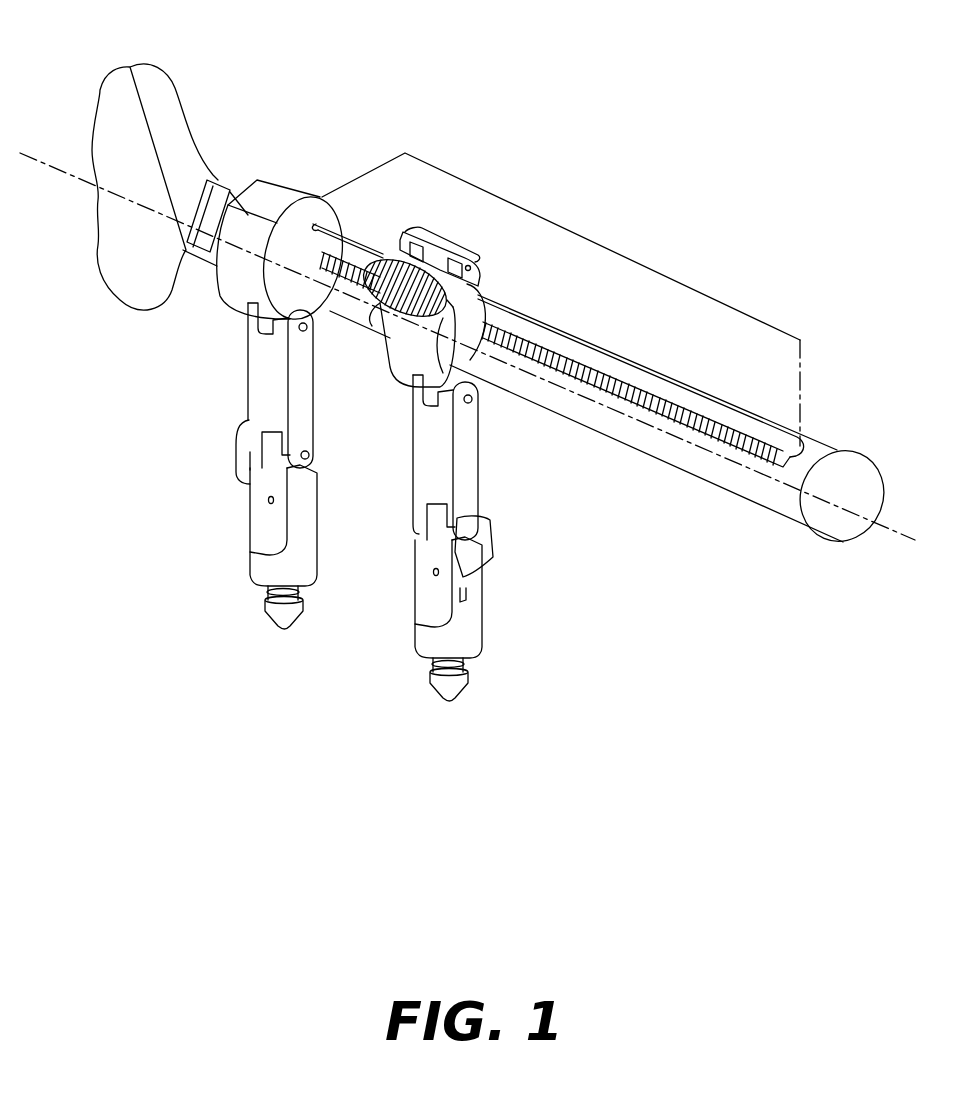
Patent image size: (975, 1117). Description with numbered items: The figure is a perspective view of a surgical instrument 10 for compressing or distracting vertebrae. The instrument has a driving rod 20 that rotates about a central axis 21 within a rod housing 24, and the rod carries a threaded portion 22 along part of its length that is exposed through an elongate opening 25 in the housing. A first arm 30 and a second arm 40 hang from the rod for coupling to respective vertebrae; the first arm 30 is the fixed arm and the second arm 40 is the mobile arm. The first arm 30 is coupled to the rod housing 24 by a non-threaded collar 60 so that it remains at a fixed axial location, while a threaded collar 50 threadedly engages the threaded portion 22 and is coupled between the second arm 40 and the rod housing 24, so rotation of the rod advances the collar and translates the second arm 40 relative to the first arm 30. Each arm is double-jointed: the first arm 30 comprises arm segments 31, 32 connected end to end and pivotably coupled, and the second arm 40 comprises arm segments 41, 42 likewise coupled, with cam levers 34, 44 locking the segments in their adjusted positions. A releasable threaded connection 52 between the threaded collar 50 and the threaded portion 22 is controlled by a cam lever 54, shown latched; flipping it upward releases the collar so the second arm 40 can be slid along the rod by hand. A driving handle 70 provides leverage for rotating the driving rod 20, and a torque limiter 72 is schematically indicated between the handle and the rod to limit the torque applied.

The surgical instrument 10 is at (574, 120).
The driving rod 20 is at (604, 389).
The central axis 21 is at (902, 528).
The threaded portion 22 is at (610, 247).
The rod housing 24 is at (808, 442).
The elongate opening 25 is at (692, 388).
The first arm 30 is at (243, 466).
The arm segment 31 is at (262, 386).
The arm segment 32 is at (250, 513).
The cam lever 34 is at (237, 460).
The second arm 40 is at (446, 538).
The arm segment 41 is at (479, 457).
The arm segment 42 is at (481, 619).
The cam lever 44 is at (477, 545).
The threaded collar 50 is at (450, 276).
The releasable threaded connection 52 is at (460, 236).
The cam lever 54 is at (406, 258).
The non-threaded collar 60 is at (284, 182).
The driving handle 70 is at (181, 158).
The torque limiter 72 is at (226, 178).